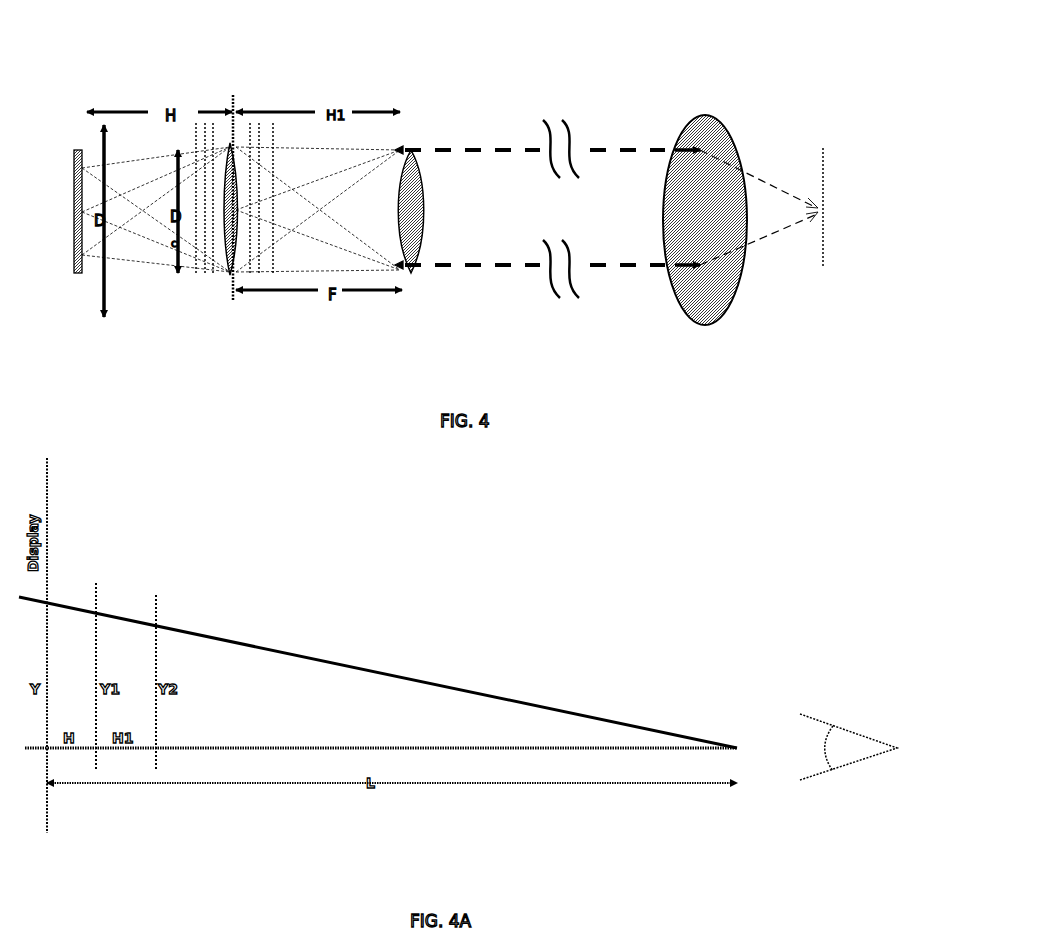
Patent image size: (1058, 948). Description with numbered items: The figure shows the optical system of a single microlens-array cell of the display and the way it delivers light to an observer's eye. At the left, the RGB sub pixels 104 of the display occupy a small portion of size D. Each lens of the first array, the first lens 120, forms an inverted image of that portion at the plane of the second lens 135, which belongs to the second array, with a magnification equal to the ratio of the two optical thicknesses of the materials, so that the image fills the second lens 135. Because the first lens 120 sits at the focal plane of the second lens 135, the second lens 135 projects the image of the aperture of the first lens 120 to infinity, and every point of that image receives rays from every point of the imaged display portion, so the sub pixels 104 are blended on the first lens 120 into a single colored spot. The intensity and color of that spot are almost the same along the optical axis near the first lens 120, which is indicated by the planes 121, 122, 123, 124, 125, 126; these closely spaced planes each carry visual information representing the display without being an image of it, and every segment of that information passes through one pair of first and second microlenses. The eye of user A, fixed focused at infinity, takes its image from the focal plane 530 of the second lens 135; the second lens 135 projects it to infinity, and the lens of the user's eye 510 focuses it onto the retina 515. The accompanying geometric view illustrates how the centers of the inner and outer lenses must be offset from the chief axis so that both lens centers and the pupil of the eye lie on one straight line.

In FIG. 4, the sub pixels 104 is at (52, 234).
In FIG. 4, the first lens 120 is at (227, 250).
In FIG. 4A, the first lens 120 is at (99, 600).
In FIG. 4, the plane 121 is at (194, 122).
In FIG. 4, the plane 122 is at (203, 122).
In FIG. 4, the plane 123 is at (212, 122).
In FIG. 4, the plane 124 is at (252, 122).
In FIG. 4, the plane 125 is at (262, 122).
In FIG. 4, the plane 126 is at (277, 122).
In FIG. 4, the second lens 135 is at (411, 278).
In FIG. 4A, the second lens 135 is at (160, 607).
In FIG. 4, the lens of the user's eye 510 is at (745, 88).
In FIG. 4, the retina 515 is at (830, 238).
In FIG. 4, the focal plane 530 is at (261, 212).